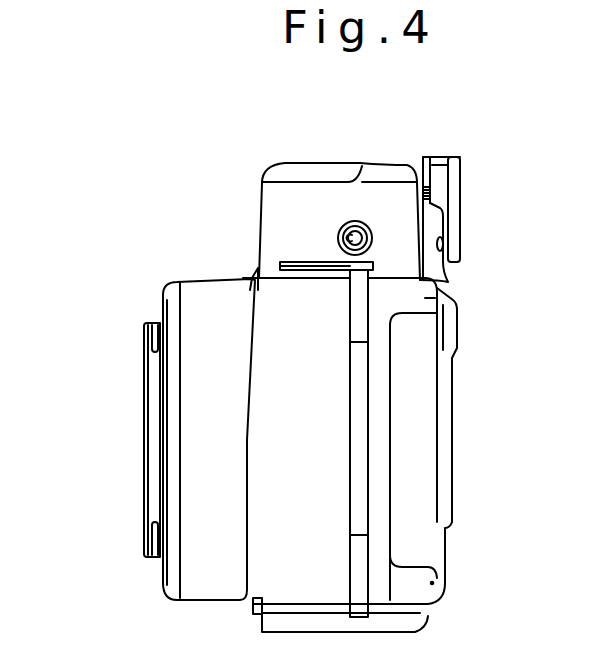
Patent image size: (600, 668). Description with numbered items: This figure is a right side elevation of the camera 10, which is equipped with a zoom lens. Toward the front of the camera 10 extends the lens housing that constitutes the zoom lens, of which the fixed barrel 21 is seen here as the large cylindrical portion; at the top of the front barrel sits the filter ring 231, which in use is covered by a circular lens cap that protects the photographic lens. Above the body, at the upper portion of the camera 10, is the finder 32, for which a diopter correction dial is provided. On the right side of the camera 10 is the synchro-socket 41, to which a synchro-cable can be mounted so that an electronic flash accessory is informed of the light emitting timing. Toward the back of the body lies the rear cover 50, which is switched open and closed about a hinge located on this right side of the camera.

The camera 10 is at (351, 394).
The fixed barrel 21 is at (215, 315).
The filter ring 231 is at (143, 434).
The finder 32 is at (450, 160).
The synchro-socket 41 is at (347, 238).
The rear cover 50 is at (452, 327).